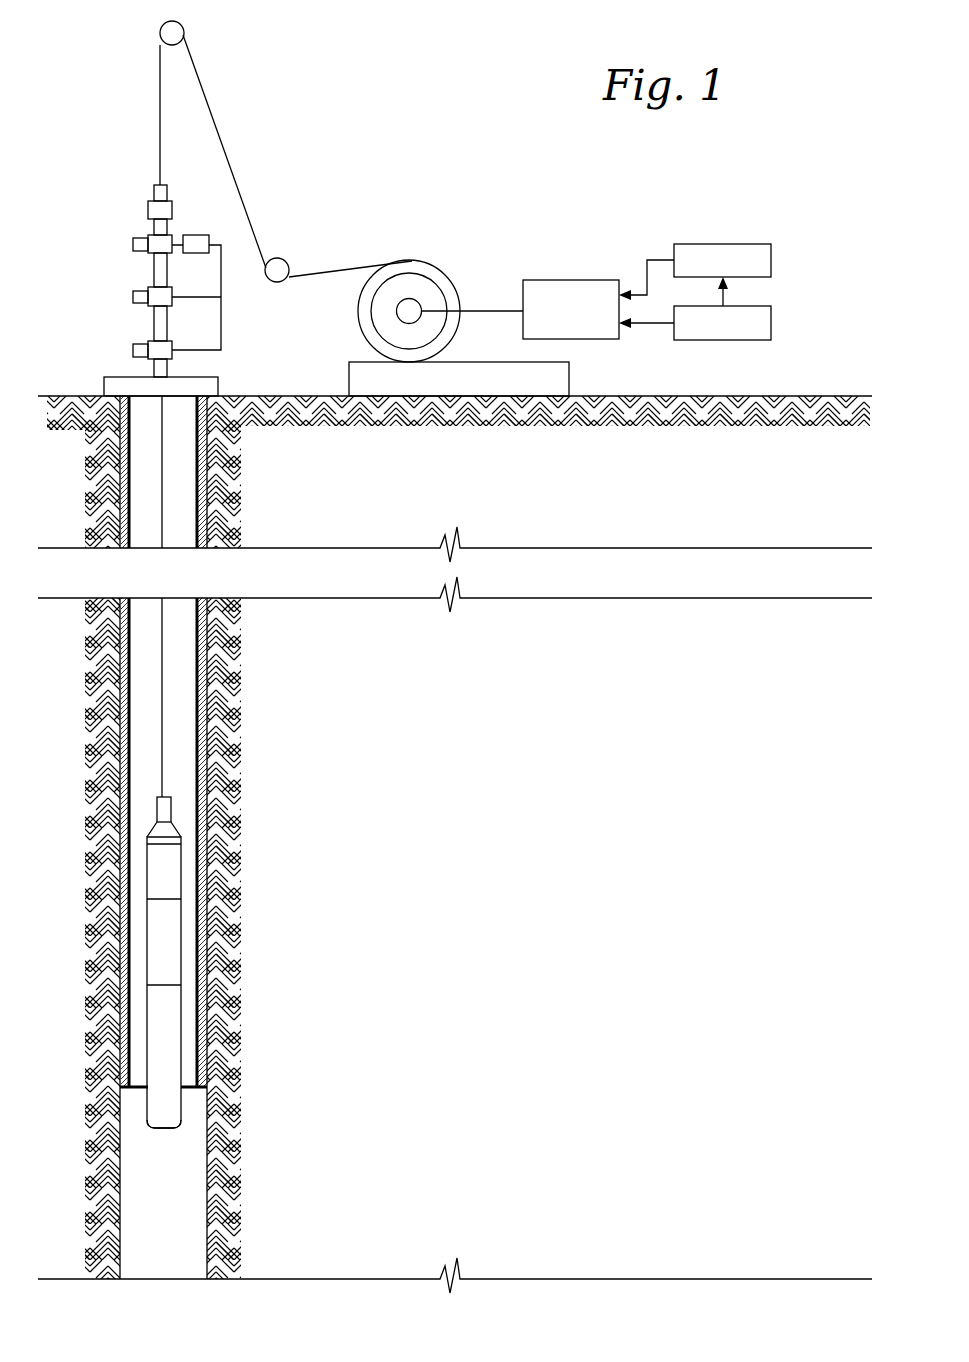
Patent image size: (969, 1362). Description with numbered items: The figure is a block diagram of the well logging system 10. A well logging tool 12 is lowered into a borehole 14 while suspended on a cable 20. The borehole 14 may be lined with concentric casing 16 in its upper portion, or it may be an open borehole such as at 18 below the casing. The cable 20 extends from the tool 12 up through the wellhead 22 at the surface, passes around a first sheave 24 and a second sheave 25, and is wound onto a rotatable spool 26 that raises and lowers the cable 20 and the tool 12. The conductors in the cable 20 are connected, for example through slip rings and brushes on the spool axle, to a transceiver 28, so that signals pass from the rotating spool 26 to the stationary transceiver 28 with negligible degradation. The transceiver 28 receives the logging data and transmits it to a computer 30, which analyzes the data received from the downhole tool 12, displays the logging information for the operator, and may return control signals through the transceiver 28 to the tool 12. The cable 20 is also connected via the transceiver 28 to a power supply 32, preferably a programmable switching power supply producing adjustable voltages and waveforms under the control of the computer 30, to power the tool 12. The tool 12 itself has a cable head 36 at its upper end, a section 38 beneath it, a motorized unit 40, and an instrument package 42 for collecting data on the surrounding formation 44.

The well logging system 10 is at (540, 188).
The well logging tool 12 is at (233, 954).
The borehole 14 is at (177, 1234).
The casing 16 is at (203, 656).
The open borehole 18 is at (212, 1185).
The cable 20 is at (163, 727).
The wellhead 22 is at (128, 182).
The first sheave 24 is at (168, 32).
The second sheave 25 is at (278, 268).
The rotatable spool 26 is at (418, 262).
The transceiver 28 is at (572, 280).
The computer 30 is at (771, 323).
The power supply 32 is at (771, 260).
The cable head 36 is at (171, 808).
The telemetry section 38 is at (170, 862).
The motorized unit 40 is at (169, 953).
The instrument package 42 is at (171, 1107).
The formation 44 is at (232, 998).